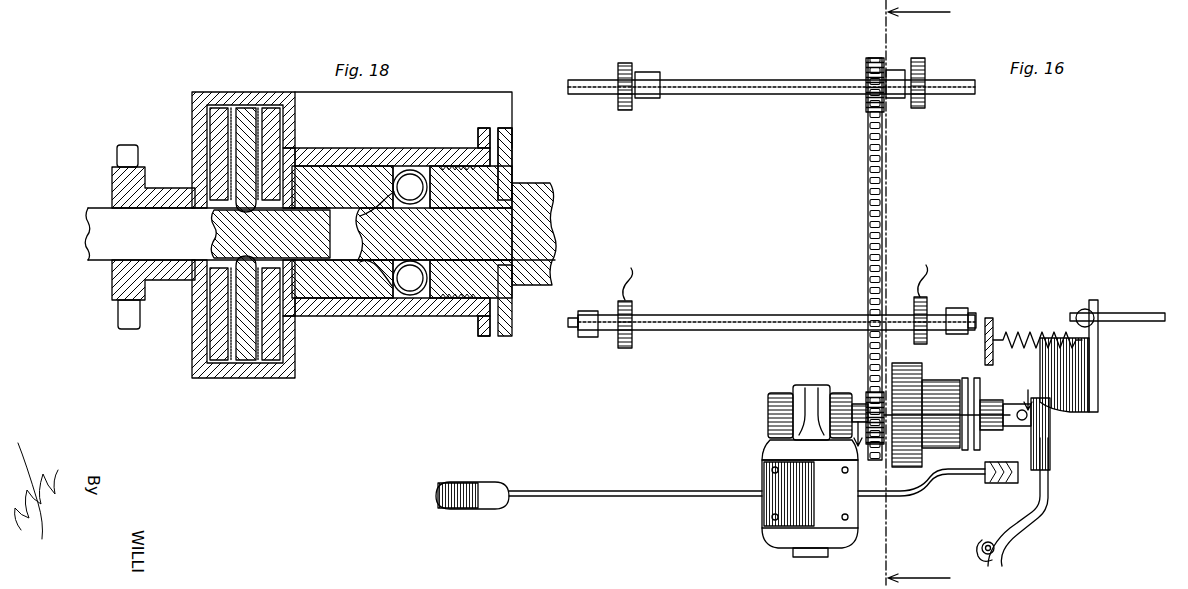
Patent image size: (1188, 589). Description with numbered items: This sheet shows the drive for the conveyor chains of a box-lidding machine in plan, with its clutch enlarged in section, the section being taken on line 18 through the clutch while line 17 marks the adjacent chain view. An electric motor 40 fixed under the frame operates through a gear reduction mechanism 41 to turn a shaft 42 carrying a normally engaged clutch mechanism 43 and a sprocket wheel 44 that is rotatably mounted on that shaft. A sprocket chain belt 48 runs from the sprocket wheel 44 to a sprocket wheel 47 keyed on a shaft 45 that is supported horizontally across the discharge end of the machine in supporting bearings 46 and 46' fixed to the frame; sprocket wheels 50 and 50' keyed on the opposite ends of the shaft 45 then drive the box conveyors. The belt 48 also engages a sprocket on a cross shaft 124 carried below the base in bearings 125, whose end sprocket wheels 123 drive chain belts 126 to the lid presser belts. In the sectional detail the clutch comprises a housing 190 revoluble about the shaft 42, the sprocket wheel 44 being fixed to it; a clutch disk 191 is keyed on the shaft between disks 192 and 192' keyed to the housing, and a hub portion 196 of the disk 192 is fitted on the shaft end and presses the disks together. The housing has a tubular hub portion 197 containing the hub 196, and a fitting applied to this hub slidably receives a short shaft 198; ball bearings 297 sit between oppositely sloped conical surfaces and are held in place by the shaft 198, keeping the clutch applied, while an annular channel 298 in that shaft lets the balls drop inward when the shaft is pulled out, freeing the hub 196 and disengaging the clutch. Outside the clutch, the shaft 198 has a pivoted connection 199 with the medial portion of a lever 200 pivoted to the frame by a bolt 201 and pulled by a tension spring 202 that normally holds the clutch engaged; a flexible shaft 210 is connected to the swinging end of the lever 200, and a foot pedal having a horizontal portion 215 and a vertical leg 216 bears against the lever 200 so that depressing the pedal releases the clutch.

In FIG. 16, the section line 17 is at (904, 292).
In FIG. 16, the section line 18 is at (946, 421).
In FIG. 16, the electric motor 40 is at (763, 456).
In FIG. 16, the gear reduction mechanism 41 is at (770, 398).
In FIG. 18, the shaft 42 is at (90, 210).
In FIG. 16, the shaft 42 is at (858, 406).
In FIG. 18, the clutch mechanism 43 is at (441, 124).
In FIG. 16, the clutch mechanism 43 is at (946, 384).
In FIG. 18, the sprocket wheel 44 is at (117, 154).
In FIG. 16, the sprocket wheel 44 is at (866, 394).
In FIG. 16, the shaft 45 is at (756, 92).
In FIG. 16, the supporting bearing 46 is at (909, 103).
In FIG. 16, the supporting bearing 46' is at (626, 107).
In FIG. 16, the sprocket wheel 47 is at (866, 58).
In FIG. 16, the sprocket chain belt 48 is at (868, 202).
In FIG. 16, the sprocket wheel 50 is at (943, 91).
In FIG. 16, the sprocket wheel 50' is at (608, 102).
In FIG. 16, the sprocket wheel 123 is at (787, 273).
In FIG. 16, the cross shaft 124 is at (740, 316).
In FIG. 16, the bearing 125 is at (588, 336).
In FIG. 16, the chain belt 126 is at (632, 304).
In FIG. 18, the housing 190 is at (229, 92).
In FIG. 18, the clutch disk 191 is at (255, 144).
In FIG. 18, the disk 192 is at (299, 227).
In FIG. 18, the disk 192' is at (178, 227).
In FIG. 18, the hub portion 196 is at (312, 316).
In FIG. 18, the tubular hub portion 197 is at (389, 152).
In FIG. 16, the tubular hub portion 197 is at (982, 430).
In FIG. 18, the short shaft 198 is at (543, 220).
In FIG. 16, the short shaft 198 is at (1046, 426).
In FIG. 16, the pivoted connection 199 is at (1078, 416).
In FIG. 16, the lever 200 is at (1042, 508).
In FIG. 16, the bolt 201 is at (999, 548).
In FIG. 16, the spring 202 is at (1024, 345).
In FIG. 16, the flexible shaft 210 is at (1134, 313).
In FIG. 16, the horizontal portion 215 is at (642, 488).
In FIG. 16, the vertical leg 216 is at (986, 484).
In FIG. 18, the ball bearings 297 is at (432, 144).
In FIG. 18, the annular channel 298 is at (366, 292).